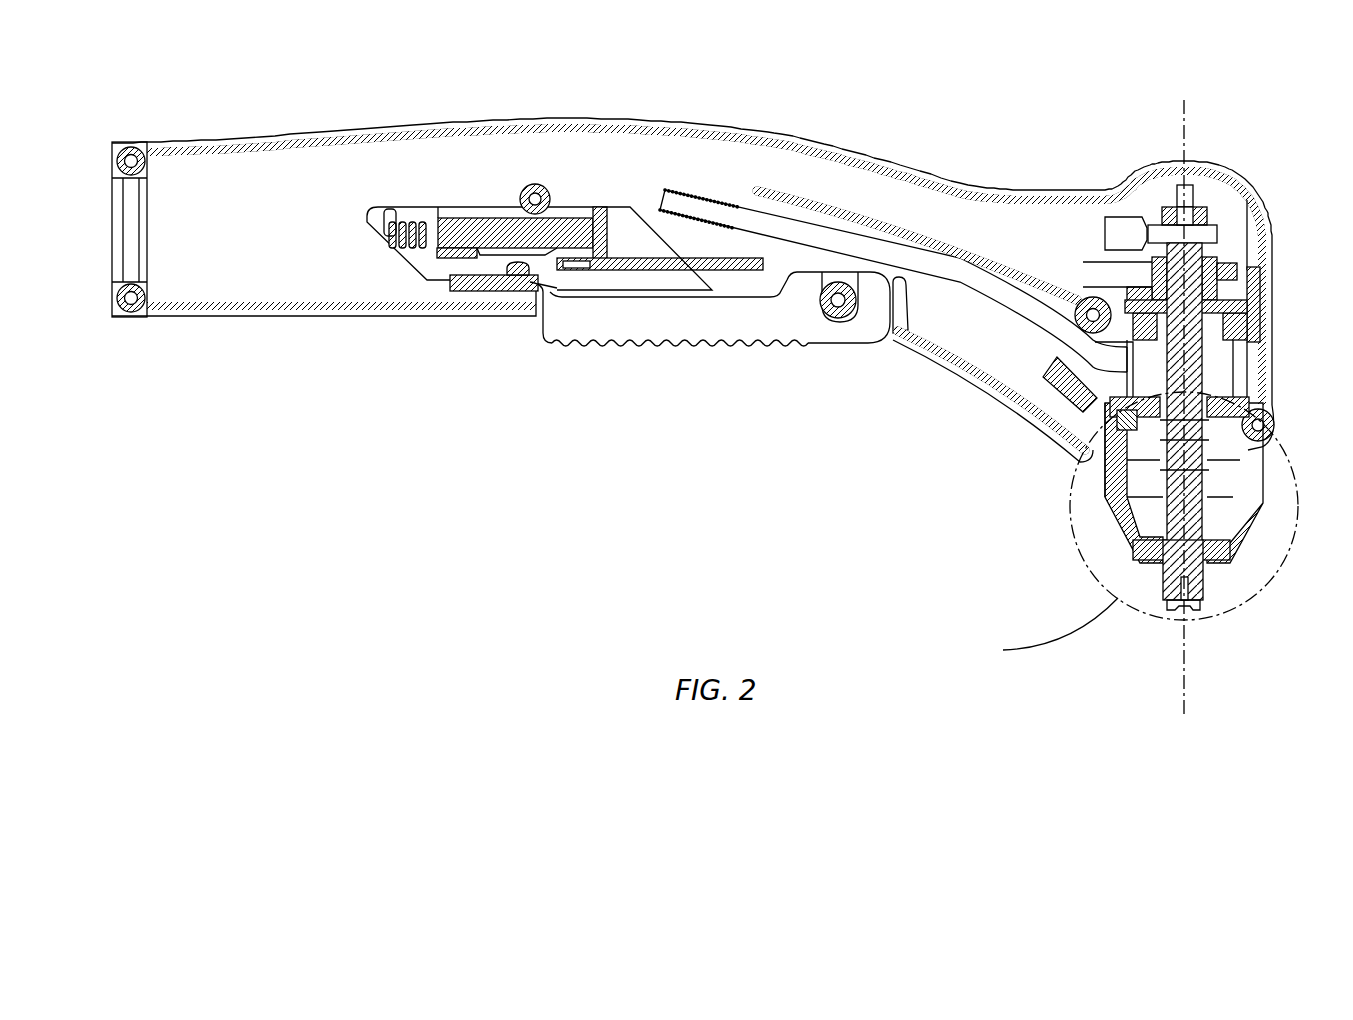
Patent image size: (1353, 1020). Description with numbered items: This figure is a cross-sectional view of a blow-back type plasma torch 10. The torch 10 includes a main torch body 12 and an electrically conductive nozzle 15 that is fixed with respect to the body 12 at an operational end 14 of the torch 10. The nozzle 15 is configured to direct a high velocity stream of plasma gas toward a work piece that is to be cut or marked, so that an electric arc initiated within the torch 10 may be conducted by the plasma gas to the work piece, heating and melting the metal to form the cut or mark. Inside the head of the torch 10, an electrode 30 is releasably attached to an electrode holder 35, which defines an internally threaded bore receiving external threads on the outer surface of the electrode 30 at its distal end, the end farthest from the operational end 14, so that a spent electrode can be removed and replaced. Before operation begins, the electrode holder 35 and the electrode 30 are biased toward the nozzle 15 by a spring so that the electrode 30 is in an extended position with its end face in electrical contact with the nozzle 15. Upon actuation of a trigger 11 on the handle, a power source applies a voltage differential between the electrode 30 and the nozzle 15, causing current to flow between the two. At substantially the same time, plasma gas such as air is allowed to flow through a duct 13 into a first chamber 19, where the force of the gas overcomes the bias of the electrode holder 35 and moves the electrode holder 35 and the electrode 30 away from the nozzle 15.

The blow-back type plasma torch 10 is at (370, 98).
The trigger 11 is at (655, 328).
The main torch body 12 is at (1272, 340).
The duct 13 is at (1002, 290).
The operational end 14 is at (1198, 636).
The electrically conductive nozzle 15 is at (1177, 605).
The first chamber 19 is at (1095, 432).
The electrode 30 is at (1200, 573).
The electrode holder 35 is at (1162, 257).